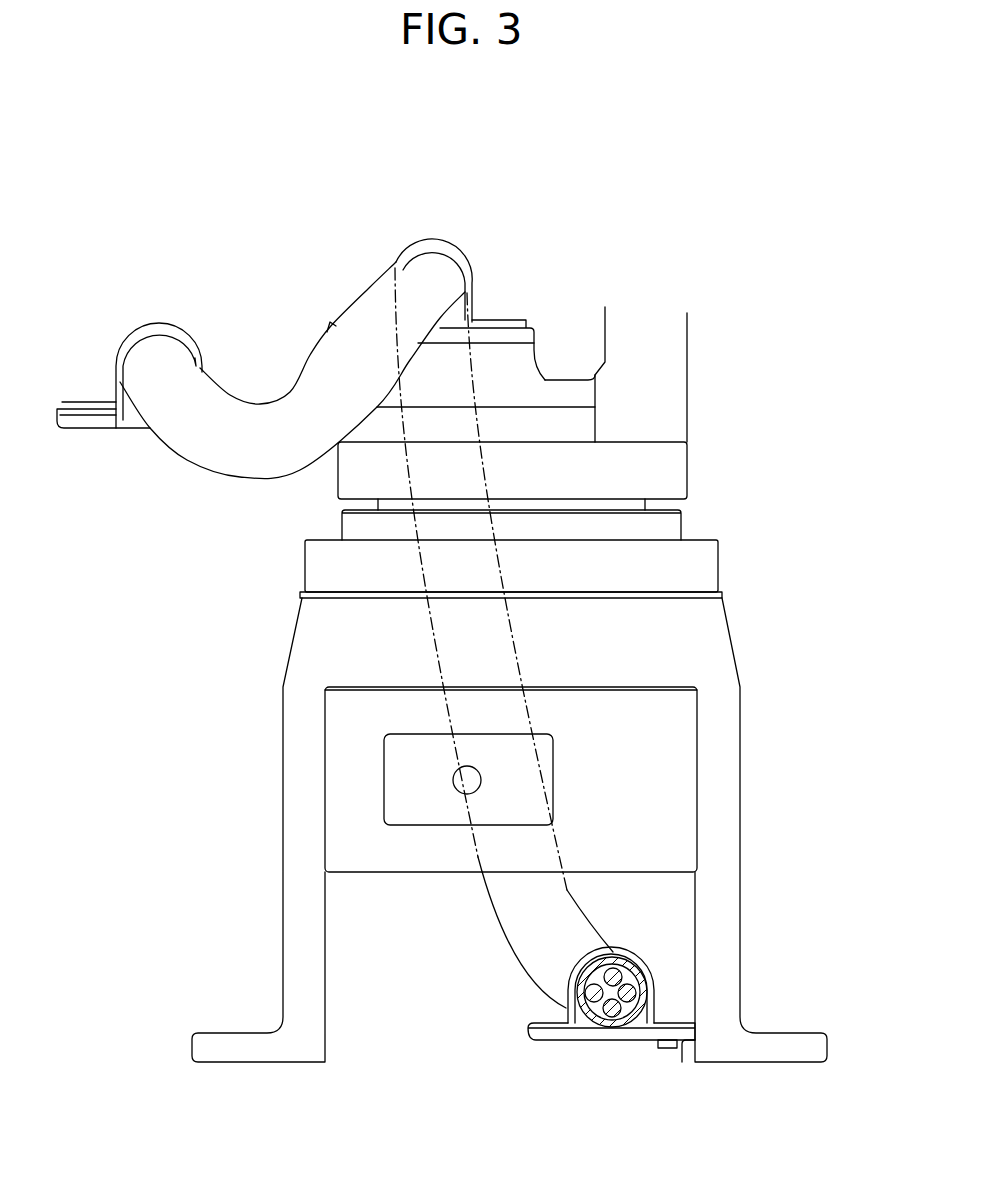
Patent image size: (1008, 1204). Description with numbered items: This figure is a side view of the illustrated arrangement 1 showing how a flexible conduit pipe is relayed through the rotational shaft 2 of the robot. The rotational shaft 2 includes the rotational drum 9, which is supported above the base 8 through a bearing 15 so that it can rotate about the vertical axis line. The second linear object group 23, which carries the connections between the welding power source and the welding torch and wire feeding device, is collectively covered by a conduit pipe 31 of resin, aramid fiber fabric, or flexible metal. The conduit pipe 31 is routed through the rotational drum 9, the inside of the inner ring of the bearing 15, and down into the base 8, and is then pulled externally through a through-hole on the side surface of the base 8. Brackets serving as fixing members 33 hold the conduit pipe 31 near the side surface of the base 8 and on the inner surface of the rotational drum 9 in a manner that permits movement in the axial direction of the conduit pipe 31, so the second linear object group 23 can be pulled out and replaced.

The wire harness 1 is at (229, 214).
The rotational shaft 2 is at (822, 624).
The base 8 is at (740, 850).
The rotational drum 9 is at (687, 470).
The bearing 15 is at (720, 562).
The second linear object group 23 is at (181, 472).
The conduit pipe 31 is at (240, 480).
The bracket (fixing member) 33 is at (157, 327).